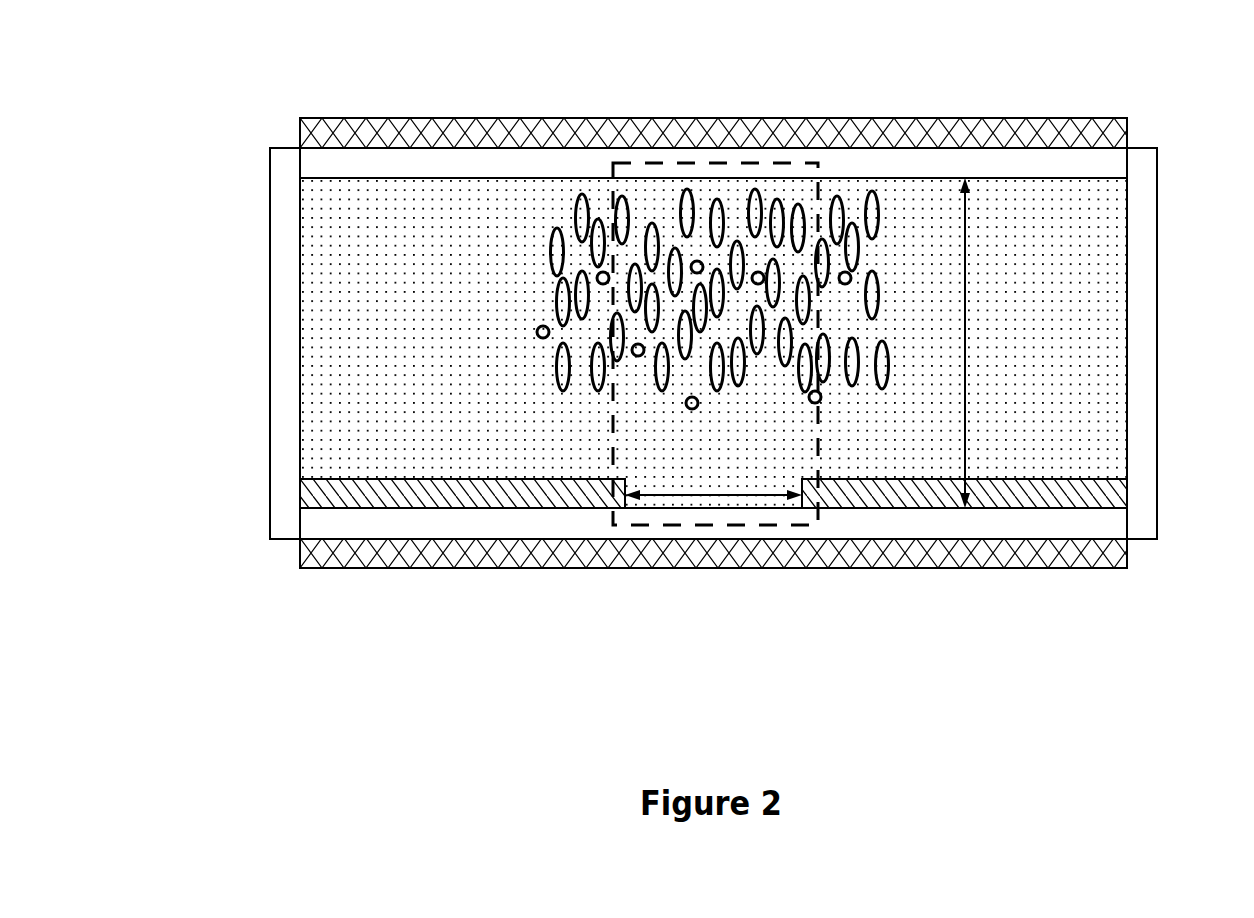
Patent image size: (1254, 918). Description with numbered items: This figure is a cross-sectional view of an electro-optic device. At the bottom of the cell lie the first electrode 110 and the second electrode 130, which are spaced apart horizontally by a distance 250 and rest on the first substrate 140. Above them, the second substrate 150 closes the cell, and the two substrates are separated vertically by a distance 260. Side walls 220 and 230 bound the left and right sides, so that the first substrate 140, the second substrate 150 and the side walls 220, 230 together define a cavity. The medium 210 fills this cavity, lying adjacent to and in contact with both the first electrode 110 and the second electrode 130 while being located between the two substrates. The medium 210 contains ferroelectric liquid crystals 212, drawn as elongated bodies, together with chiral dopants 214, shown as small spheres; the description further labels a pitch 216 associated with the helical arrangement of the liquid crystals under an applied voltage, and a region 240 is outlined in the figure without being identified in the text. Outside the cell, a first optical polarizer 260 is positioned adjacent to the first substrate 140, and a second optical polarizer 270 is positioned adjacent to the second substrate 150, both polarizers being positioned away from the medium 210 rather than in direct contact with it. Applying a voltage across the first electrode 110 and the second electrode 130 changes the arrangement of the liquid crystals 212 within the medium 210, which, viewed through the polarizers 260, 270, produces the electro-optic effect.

The first electrode 110 is at (332, 492).
The second electrode 130 is at (1098, 492).
The first substrate 140 is at (1093, 528).
The second substrate 150 is at (873, 160).
The medium 210 is at (350, 209).
The ferroelectric liquid crystals 212 is at (757, 190).
The chiral dopants 214 is at (692, 409).
The pitch 216 is at (358, 302).
The side wall 220 is at (277, 384).
The side wall 230 is at (1143, 360).
The pixel region 240 is at (655, 162).
The distance 250 is at (708, 492).
The first optical polarizer 260 is at (365, 553).
The second optical polarizer 270 is at (1083, 137).